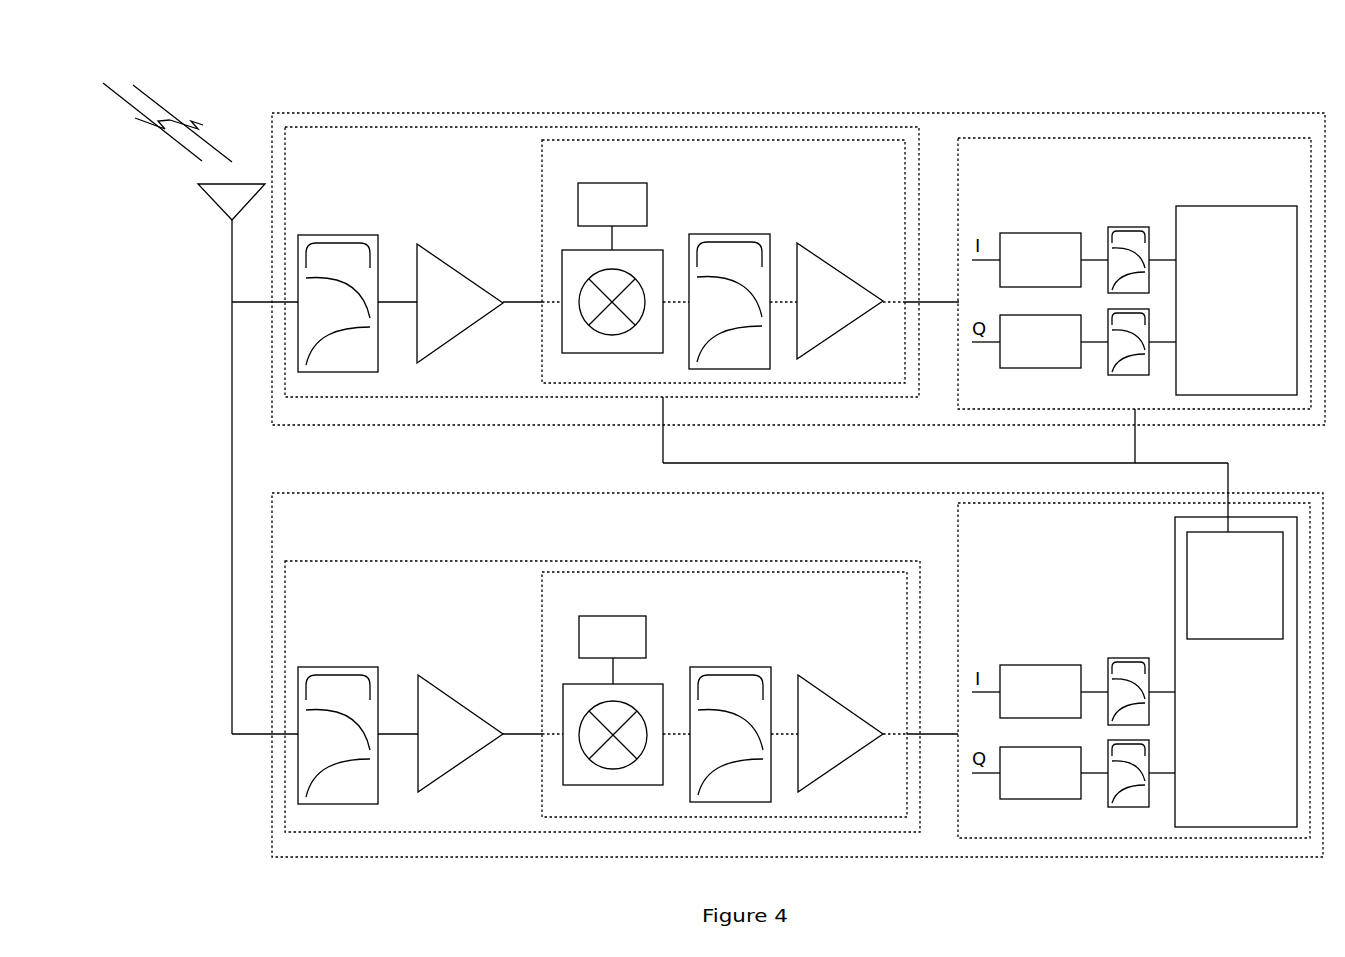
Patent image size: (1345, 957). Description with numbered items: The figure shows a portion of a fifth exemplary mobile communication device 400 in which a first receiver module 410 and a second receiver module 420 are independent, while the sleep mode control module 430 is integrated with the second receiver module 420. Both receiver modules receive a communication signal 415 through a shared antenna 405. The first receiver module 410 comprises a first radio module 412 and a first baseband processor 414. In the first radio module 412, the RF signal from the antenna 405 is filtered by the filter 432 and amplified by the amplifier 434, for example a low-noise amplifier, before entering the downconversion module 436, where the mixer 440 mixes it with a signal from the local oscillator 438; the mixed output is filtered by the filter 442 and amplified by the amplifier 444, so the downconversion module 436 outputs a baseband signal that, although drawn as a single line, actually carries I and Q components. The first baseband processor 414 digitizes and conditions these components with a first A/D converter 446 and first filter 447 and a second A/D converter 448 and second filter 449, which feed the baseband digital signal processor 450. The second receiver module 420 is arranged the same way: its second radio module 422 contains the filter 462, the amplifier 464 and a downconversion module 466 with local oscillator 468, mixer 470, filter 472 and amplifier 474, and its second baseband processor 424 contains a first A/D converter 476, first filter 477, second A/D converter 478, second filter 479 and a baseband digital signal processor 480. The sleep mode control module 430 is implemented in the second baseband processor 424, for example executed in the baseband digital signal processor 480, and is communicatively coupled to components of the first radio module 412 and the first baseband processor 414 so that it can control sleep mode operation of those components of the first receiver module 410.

The mobile communication device 400 is at (214, 83).
The antenna 405 is at (213, 202).
The received RF signal 415 is at (202, 140).
The first receiver module 410 is at (345, 113).
The first radio module 412 is at (412, 127).
The first baseband processor 414 is at (985, 138).
The downconversion module 436 is at (542, 158).
The filter 432 is at (338, 235).
The amplifier 434 is at (419, 247).
The local oscillator 438 is at (578, 208).
The mixer 440 is at (562, 272).
The filter 442 is at (722, 234).
The amplifier 444 is at (798, 247).
The first A/D converter 446 is at (1068, 233).
The first filter 447 is at (1143, 227).
The second A/D converter 448 is at (1068, 368).
The second filter 449 is at (1143, 375).
The baseband digital signal processor 450 is at (1272, 206).
The second receiver module 420 is at (305, 494).
The second radio module 422 is at (392, 561).
The second baseband processor 424 is at (958, 518).
The downconversion module 466 is at (542, 590).
The filter 462 is at (338, 667).
The amplifier 464 is at (419, 678).
The local oscillator 468 is at (579, 640).
The mixer 470 is at (563, 704).
The filter 472 is at (722, 667).
The amplifier 474 is at (798, 678).
The first A/D converter 476 is at (1068, 665).
The first filter 477 is at (1143, 658).
The second A/D converter 478 is at (1068, 800).
The second filter 479 is at (1143, 808).
The baseband digital signal processor 480 is at (1176, 528).
The sleep mode control module 430 is at (1187, 577).